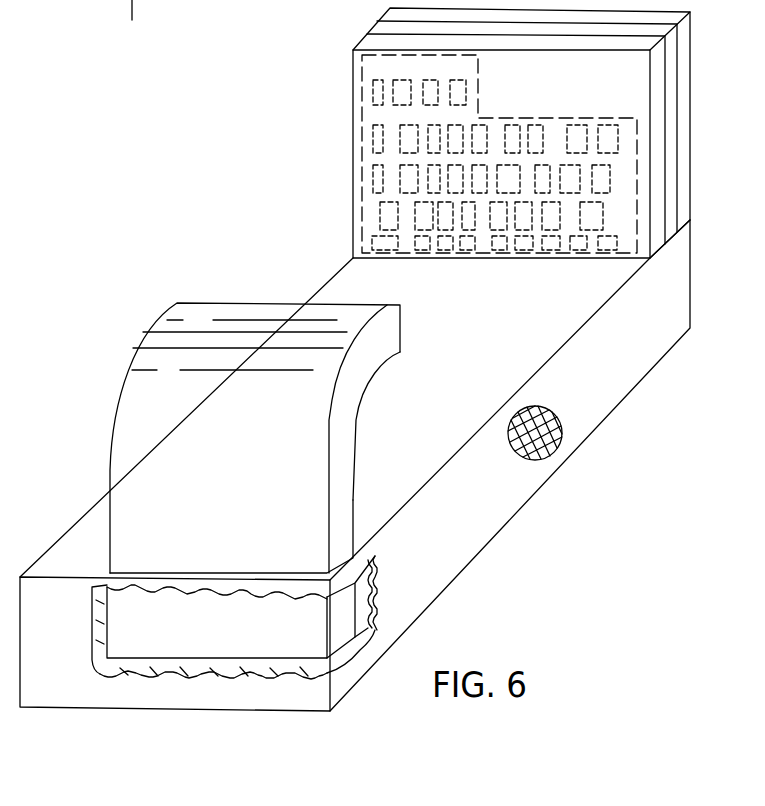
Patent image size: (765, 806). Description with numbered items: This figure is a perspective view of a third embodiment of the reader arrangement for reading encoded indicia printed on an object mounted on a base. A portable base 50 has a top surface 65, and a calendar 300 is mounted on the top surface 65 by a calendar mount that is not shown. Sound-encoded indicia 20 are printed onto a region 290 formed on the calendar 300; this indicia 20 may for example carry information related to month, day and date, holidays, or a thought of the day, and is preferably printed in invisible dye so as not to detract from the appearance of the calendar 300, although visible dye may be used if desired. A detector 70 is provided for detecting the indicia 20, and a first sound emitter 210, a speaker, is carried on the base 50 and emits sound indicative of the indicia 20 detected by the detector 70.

The portable base 50 is at (488, 530).
The top surface 65 is at (505, 337).
The detector 70 is at (115, 405).
The first sound emitter 210 is at (555, 413).
The calendar 300 is at (353, 73).
The region 290 is at (363, 158).
The sound-encoded indicia 20 is at (382, 210).